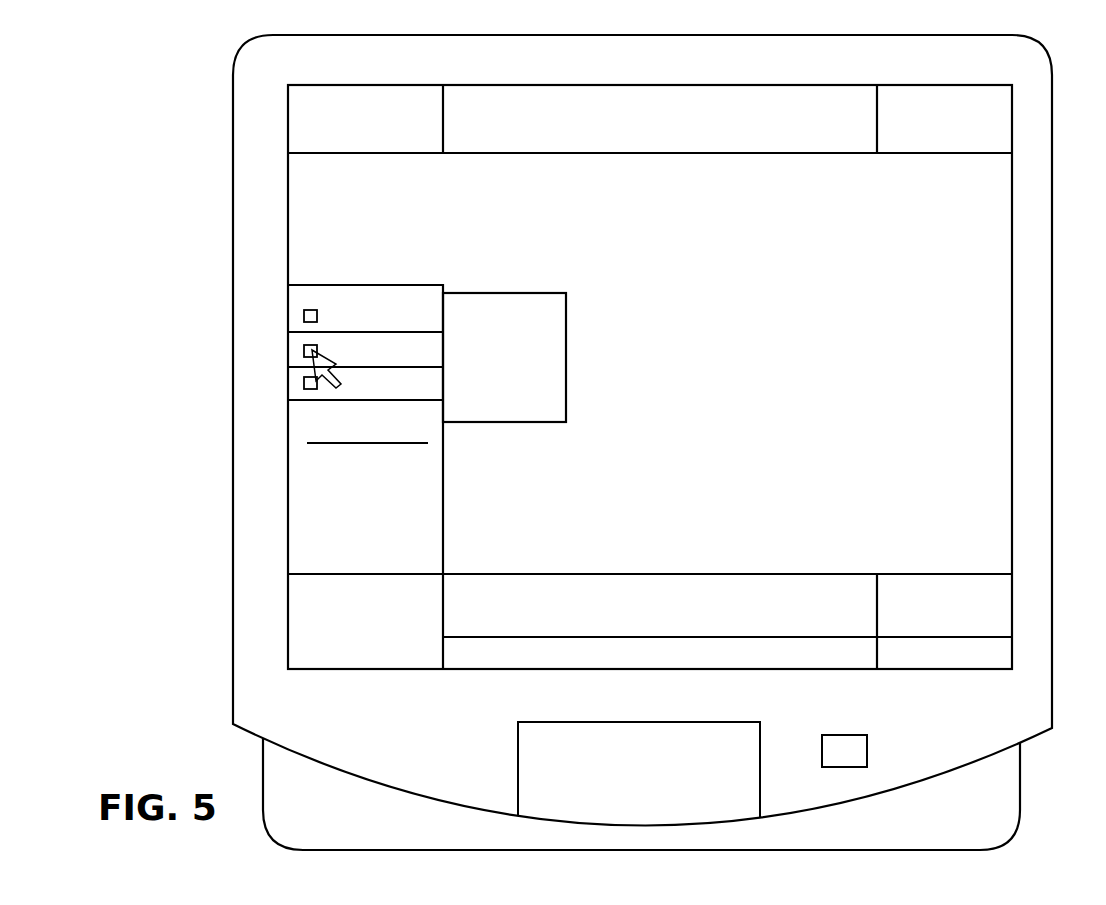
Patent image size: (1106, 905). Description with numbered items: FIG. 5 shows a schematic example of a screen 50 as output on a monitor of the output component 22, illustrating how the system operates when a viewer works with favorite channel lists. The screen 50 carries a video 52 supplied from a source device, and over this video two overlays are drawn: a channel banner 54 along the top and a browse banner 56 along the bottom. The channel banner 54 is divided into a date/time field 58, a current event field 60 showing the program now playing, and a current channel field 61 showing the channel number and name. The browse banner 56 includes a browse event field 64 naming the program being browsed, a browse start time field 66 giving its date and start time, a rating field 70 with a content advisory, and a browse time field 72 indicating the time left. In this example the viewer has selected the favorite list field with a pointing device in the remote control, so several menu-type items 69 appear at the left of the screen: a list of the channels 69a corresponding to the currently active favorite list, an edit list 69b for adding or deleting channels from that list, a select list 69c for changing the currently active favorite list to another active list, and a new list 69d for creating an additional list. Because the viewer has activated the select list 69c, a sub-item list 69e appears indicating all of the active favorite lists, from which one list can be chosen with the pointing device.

The output component 22 is at (232, 146).
The screen 50 is at (288, 190).
The video 52 is at (312, 235).
The channel banner 54 is at (787, 87).
The browse banner 56 is at (712, 574).
The date/time field 58 is at (428, 142).
The current event field 60 is at (762, 143).
The current channel field 61 is at (887, 150).
The browse event field 64 is at (527, 578).
The browse start time field 66 is at (933, 582).
The menu-type items 69 is at (287, 502).
The list of the channels 69a is at (298, 420).
The edit list 69b is at (298, 300).
The select list 69c is at (298, 345).
The new list 69d is at (298, 376).
The sub-item list 69e is at (566, 330).
The rating field 70 is at (785, 670).
The browse time field 72 is at (888, 668).